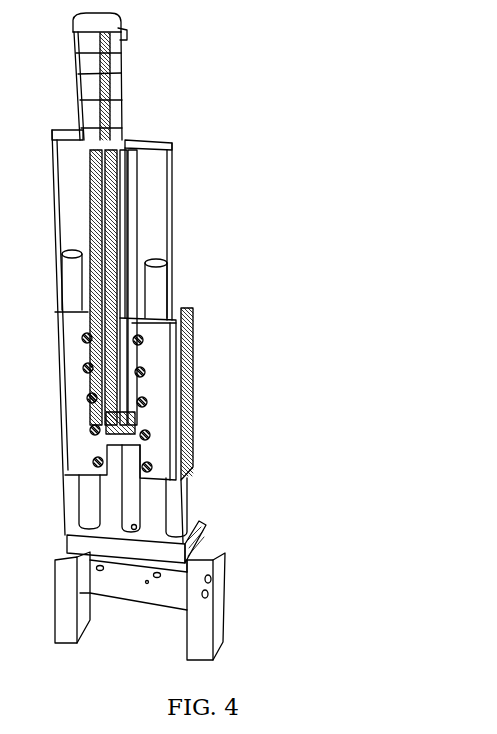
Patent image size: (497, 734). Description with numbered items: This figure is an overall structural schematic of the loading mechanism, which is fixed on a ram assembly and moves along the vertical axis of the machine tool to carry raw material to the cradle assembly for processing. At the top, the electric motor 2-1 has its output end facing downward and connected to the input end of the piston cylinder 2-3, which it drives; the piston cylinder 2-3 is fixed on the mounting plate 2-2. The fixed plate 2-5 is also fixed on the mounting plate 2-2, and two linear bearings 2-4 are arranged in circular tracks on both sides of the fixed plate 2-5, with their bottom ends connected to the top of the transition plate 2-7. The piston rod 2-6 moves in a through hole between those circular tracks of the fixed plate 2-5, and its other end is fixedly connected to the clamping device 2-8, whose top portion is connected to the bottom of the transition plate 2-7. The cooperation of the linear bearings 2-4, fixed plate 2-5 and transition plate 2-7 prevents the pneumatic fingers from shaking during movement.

The electric motor 2-1 is at (97, 75).
The mounting plate 2-2 is at (155, 166).
The piston cylinder 2-3 is at (127, 200).
The linear bearings 2-4 is at (83, 284).
The fixed plate 2-5 is at (165, 395).
The piston rod 2-6 is at (140, 497).
The transition plate 2-7 is at (205, 538).
The clamping device 2-8 is at (211, 606).